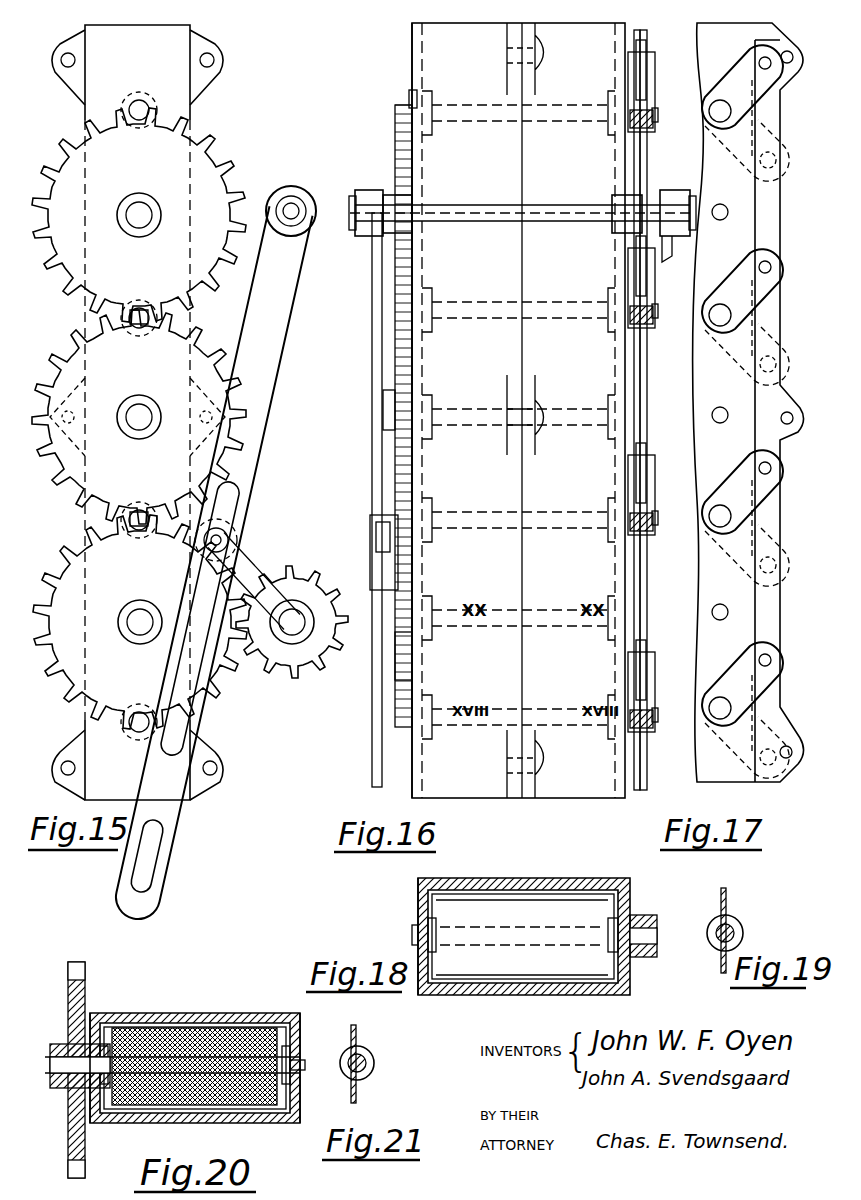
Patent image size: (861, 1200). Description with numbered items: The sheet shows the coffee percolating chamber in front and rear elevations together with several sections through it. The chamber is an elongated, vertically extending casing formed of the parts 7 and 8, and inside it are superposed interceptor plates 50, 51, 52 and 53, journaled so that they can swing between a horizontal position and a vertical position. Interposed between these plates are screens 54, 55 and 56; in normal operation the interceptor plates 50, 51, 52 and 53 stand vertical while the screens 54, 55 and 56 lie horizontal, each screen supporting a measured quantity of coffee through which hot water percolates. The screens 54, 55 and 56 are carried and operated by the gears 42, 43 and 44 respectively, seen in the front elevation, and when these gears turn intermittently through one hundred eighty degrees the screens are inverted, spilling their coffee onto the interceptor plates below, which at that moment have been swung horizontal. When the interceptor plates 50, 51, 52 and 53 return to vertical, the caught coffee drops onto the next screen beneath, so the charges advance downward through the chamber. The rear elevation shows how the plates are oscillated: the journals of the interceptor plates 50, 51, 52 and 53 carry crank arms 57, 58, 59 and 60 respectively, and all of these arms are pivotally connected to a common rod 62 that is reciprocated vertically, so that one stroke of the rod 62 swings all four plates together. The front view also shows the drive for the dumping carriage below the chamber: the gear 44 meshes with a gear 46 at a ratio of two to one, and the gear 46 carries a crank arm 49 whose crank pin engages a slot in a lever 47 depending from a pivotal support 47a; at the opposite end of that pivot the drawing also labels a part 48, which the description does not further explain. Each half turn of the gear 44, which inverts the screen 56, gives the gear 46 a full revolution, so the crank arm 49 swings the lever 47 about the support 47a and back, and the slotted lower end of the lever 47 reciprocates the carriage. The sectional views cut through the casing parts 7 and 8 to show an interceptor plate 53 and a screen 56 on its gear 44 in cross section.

In FIG. 16, the casing part 7 is at (412, 36).
In FIG. 18, the casing part 7 is at (474, 886).
In FIG. 20, the casing part 7 is at (126, 1013).
In FIG. 16, the casing part 8 is at (643, 48).
In FIG. 17, the casing part 8 is at (704, 772).
In FIG. 18, the casing part 8 is at (592, 886).
In FIG. 20, the casing part 8 is at (266, 1013).
In FIG. 15, the gear 42 is at (72, 148).
In FIG. 15, the gear 43 is at (70, 352).
In FIG. 15, the gear 44 is at (70, 552).
In FIG. 20, the gear 44 is at (72, 966).
In FIG. 15, the gear 46 is at (274, 665).
In FIG. 16, the gear 46 is at (400, 655).
In FIG. 15, the lever 47 is at (258, 420).
In FIG. 16, the lever 47 is at (372, 180).
In FIG. 15, the pivotal support 47a is at (288, 208).
In FIG. 16, the pivotal support 47a is at (497, 206).
In FIG. 16, the pawl 48 is at (680, 185).
In FIG. 15, the crank arm 49 is at (232, 576).
In FIG. 16, the crank arm 49 is at (383, 522).
In FIG. 16, the interceptor plate 50 is at (582, 120).
In FIG. 16, the interceptor plate 51 is at (582, 318).
In FIG. 16, the interceptor plate 52 is at (586, 522).
In FIG. 16, the interceptor plate 53 is at (560, 722).
In FIG. 18, the interceptor plate 53 is at (538, 870).
In FIG. 16, the screen 54 is at (585, 212).
In FIG. 16, the screen 55 is at (588, 416).
In FIG. 16, the screen 56 is at (562, 622).
In FIG. 20, the screen 56 is at (182, 1030).
In FIG. 16, the crank arm 57 is at (650, 80).
In FIG. 17, the crank arm 57 is at (748, 74).
In FIG. 16, the crank arm 58 is at (648, 306).
In FIG. 17, the crank arm 58 is at (748, 278).
In FIG. 16, the crank arm 59 is at (652, 486).
In FIG. 17, the crank arm 59 is at (748, 480).
In FIG. 16, the crank arm 60 is at (650, 698).
In FIG. 17, the crank arm 60 is at (748, 672).
In FIG. 16, the rod 62 is at (644, 428).
In FIG. 17, the rod 62 is at (768, 316).